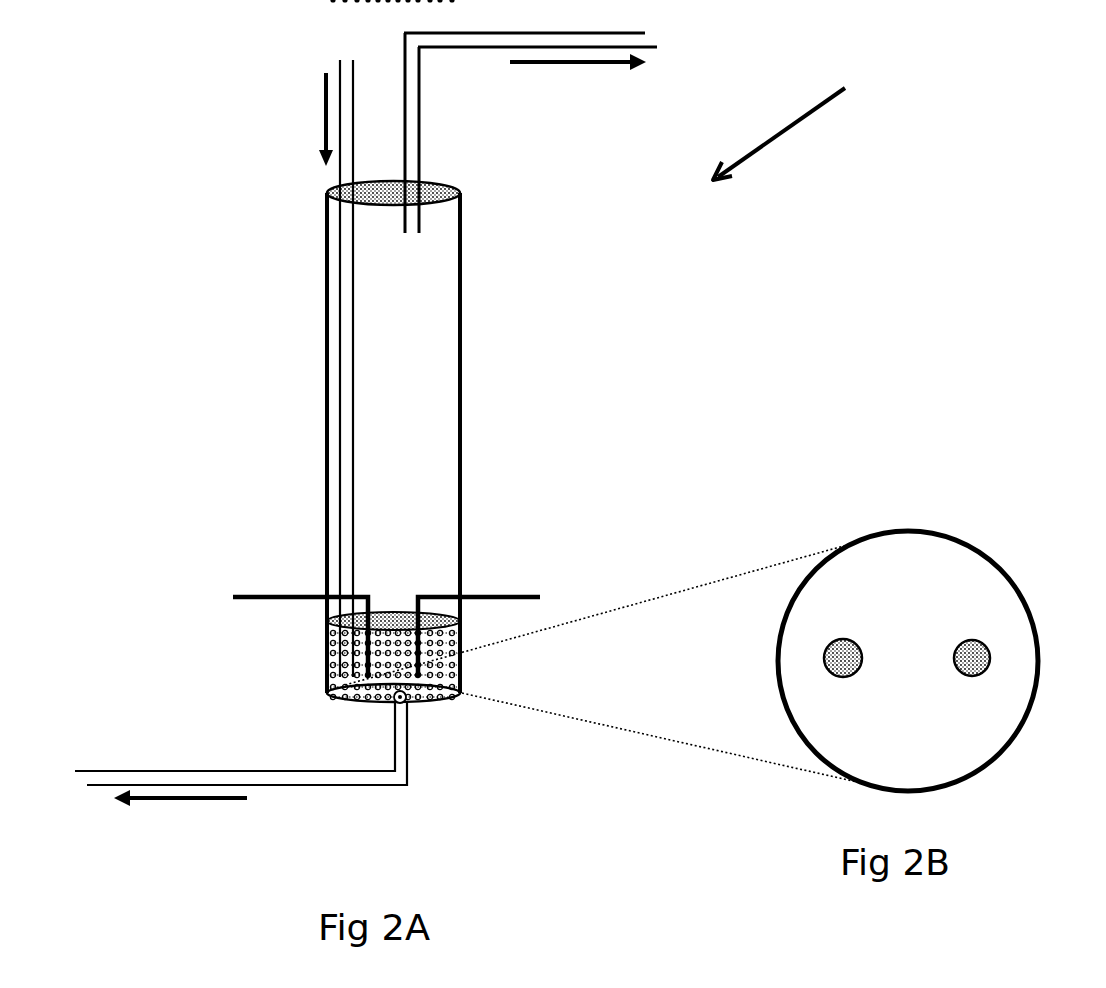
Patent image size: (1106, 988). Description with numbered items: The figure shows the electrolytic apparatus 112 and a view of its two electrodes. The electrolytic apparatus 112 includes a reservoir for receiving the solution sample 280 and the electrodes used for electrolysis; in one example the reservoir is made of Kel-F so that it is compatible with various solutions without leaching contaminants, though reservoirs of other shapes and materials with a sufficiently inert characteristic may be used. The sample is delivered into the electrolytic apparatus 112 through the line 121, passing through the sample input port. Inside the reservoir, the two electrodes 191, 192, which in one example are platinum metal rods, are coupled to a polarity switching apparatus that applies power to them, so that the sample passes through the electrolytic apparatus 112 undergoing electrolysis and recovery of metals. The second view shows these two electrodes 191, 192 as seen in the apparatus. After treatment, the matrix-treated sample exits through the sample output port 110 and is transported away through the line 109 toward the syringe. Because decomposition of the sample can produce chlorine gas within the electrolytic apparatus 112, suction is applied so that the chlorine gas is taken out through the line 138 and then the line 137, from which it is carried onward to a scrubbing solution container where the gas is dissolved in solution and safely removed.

In FIG. 2A, the sample output port 110 is at (462, 690).
In FIG. 2A, the solution sample 280 is at (327, 690).
In FIG. 2A, the line 121 is at (340, 248).
In FIG. 2A, the line 138 is at (420, 153).
In FIG. 2A, the line 137 is at (473, 48).
In FIG. 2A, the electrode 191 is at (258, 592).
In FIG. 2B, the electrode 191 is at (849, 675).
In FIG. 2A, the electrode 192 is at (502, 592).
In FIG. 2B, the electrode 192 is at (978, 676).
In FIG. 2A, the line 109 is at (353, 786).
In FIG. 2A, the electrolytic apparatus 112 is at (818, 125).